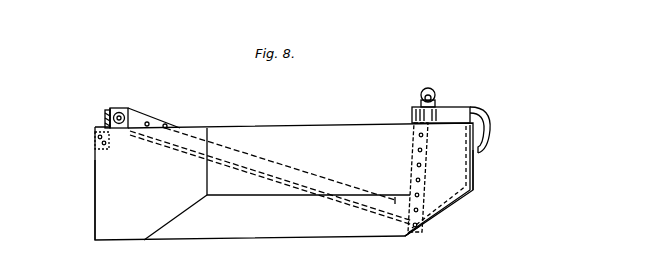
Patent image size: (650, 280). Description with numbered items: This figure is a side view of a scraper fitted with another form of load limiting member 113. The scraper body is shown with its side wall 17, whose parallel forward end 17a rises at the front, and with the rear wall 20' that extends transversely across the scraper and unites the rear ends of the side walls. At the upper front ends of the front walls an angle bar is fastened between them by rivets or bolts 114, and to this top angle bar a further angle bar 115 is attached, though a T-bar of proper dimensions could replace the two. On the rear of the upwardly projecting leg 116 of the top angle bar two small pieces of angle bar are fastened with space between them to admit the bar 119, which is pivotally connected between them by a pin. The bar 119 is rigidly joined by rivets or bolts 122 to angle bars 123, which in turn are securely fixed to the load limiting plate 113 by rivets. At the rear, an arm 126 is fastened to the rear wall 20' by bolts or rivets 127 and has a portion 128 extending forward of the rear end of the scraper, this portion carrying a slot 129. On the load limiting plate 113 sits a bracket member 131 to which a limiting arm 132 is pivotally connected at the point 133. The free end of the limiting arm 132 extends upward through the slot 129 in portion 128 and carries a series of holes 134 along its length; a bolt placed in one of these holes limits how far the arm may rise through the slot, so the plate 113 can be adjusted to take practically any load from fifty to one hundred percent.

The side wall 17 is at (295, 135).
The forward end of side wall 17a is at (120, 184).
The load limiting member 113 is at (270, 178).
The rivets or bolts 114 is at (95, 141).
The angle bar 115 is at (108, 120).
The upwardly projecting leg 116 is at (122, 101).
The bar 119 is at (136, 115).
The rivets or bolts 122 is at (166, 125).
The angle bars 123 is at (234, 147).
The arm 126 is at (490, 131).
The bolts or rivets 127 is at (485, 121).
The portion of arm 128 is at (440, 108).
The slot 129 is at (422, 96).
The bracket member 131 is at (411, 238).
The limiting arm 132 is at (424, 173).
The pivot point 133 is at (420, 222).
The holes 134 is at (410, 152).
The rear wall 20' is at (491, 170).